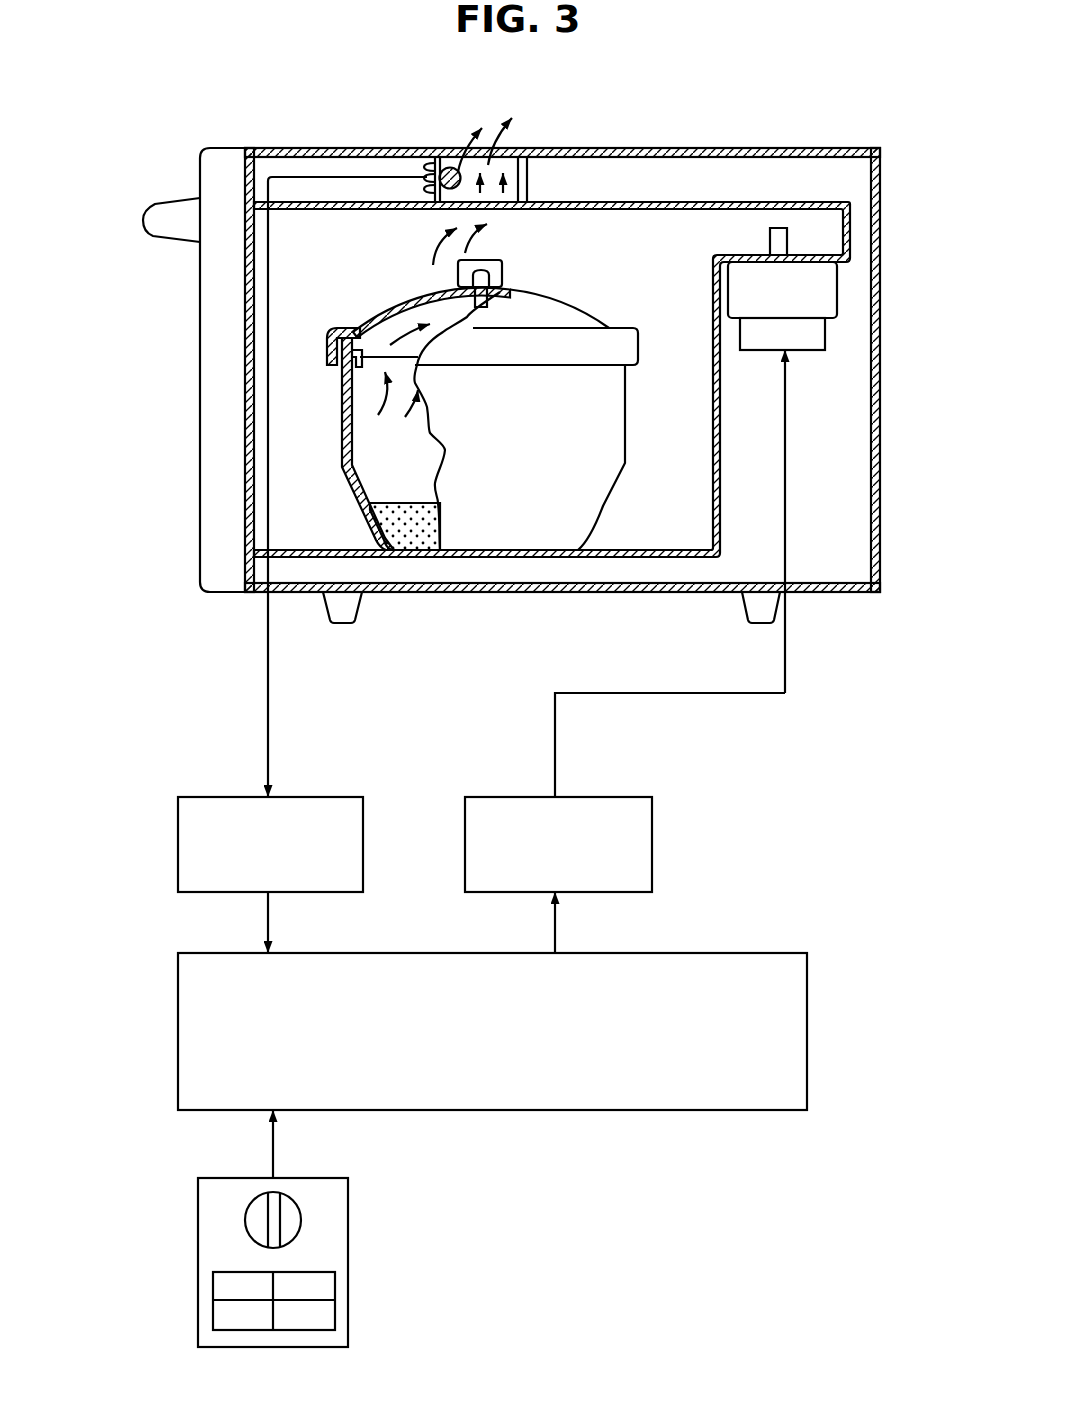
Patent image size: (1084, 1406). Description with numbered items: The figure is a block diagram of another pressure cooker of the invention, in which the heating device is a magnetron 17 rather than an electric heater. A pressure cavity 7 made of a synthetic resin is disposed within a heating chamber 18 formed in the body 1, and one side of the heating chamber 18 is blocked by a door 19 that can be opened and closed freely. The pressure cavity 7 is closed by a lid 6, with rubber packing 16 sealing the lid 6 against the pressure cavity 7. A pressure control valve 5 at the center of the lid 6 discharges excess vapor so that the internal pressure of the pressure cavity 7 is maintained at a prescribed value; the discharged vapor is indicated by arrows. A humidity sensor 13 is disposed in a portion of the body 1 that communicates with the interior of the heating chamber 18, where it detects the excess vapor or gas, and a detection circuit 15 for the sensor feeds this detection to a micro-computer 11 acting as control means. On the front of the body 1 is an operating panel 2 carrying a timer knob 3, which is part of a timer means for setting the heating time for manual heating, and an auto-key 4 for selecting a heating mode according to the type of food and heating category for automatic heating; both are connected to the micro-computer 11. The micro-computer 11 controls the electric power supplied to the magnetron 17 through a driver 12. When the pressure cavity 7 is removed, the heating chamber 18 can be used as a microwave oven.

The body 1 is at (877, 412).
The operating panel 2 is at (273, 1228).
The timer knob 3 is at (245, 1215).
The auto-key 4 is at (327, 1313).
The pressure control valve 5 is at (502, 262).
The lid 6 is at (573, 308).
The pressure cavity 7 is at (567, 528).
The micro-computer 11 is at (785, 950).
The driver 12 is at (653, 842).
The humidity sensor 13 is at (445, 167).
The detection circuit 15 is at (178, 810).
The packing 16 is at (353, 327).
The magnetron 17 is at (787, 270).
The heating chamber 18 is at (628, 222).
The door 19 is at (213, 530).